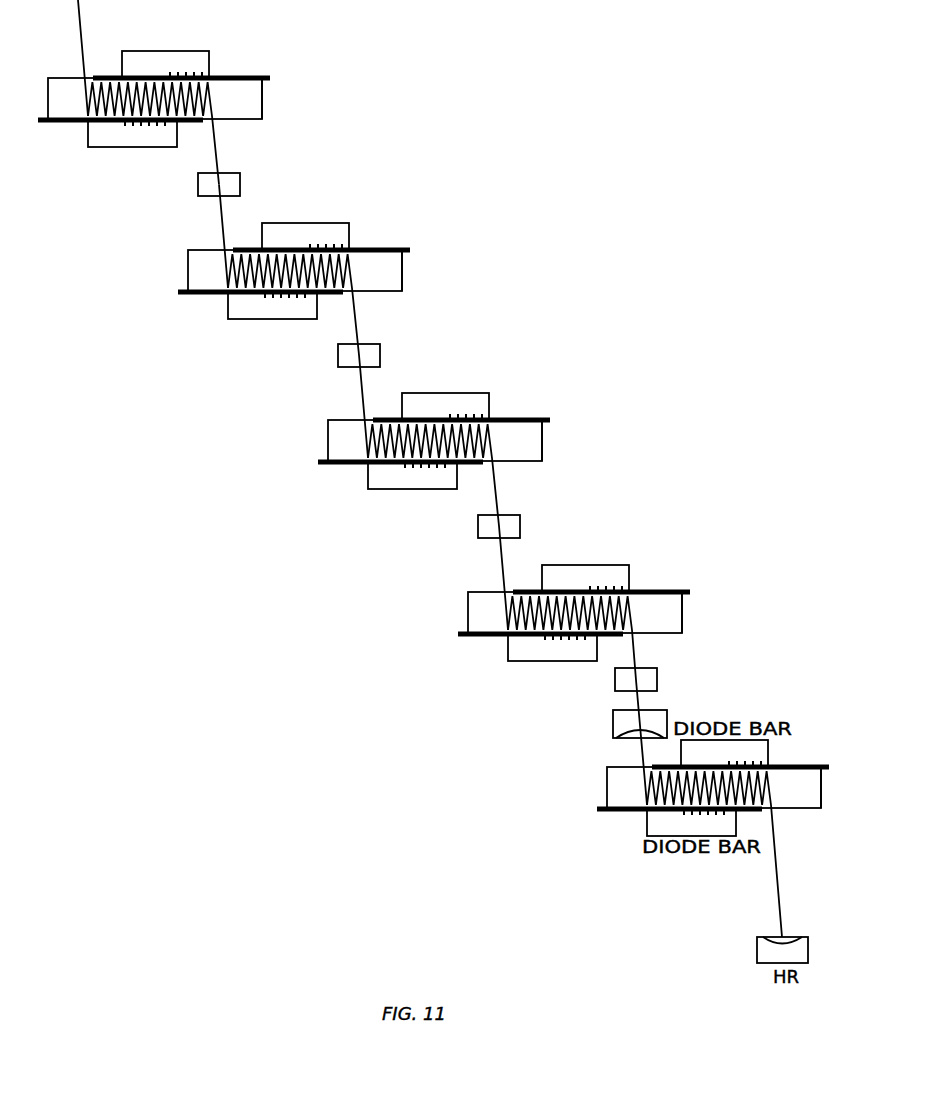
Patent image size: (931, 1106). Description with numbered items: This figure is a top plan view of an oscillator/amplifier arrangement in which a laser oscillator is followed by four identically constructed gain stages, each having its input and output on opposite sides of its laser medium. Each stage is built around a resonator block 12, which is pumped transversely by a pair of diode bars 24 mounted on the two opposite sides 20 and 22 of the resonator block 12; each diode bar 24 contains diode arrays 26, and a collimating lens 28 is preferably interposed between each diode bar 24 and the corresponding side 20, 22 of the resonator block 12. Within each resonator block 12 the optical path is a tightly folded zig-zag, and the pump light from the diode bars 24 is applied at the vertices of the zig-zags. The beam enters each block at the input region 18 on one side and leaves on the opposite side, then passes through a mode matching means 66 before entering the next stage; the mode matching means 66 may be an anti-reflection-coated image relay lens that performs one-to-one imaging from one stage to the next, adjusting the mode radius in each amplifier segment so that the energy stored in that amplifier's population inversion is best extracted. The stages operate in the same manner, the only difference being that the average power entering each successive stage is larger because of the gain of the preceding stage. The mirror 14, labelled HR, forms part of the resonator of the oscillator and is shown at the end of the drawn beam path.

The resonator block 12 is at (414, 443).
The mirror 14 is at (808, 948).
The input face / entrance 18 is at (613, 719).
The side of resonator block 20 is at (553, 443).
The side of resonator block 22 is at (513, 518).
The diode bar 24 is at (427, 446).
The diode array 26 is at (432, 445).
The collimating lens 28 is at (431, 442).
The mode matching means 66 is at (446, 430).